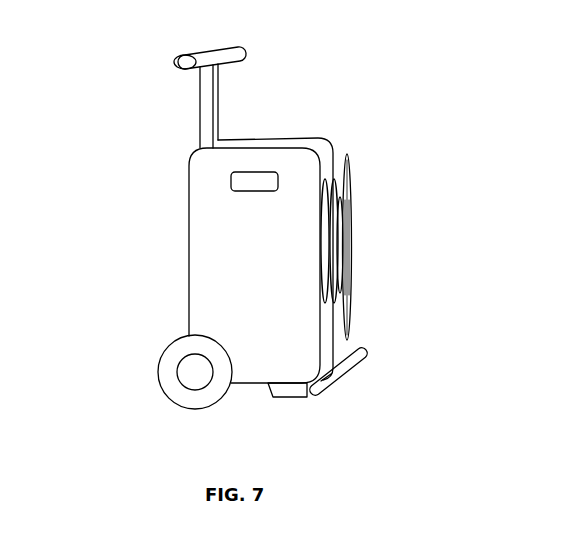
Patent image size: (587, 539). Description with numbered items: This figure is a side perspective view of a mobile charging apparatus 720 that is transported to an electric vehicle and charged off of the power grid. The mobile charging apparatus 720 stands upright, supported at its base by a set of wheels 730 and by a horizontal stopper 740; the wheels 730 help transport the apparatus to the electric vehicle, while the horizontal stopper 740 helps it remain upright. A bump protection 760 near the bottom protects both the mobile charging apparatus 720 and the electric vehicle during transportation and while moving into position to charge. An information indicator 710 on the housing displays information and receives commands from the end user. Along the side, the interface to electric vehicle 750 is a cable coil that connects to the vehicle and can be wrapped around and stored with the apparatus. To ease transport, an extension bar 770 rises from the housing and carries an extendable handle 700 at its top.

The extendable handle 700 is at (174, 60).
The information indicator 710 is at (231, 180).
The mobile charging apparatus 720 is at (189, 257).
The wheels 730 is at (158, 370).
The horizontal stopper 740 is at (270, 398).
The interface to electric vehicle 750 is at (372, 247).
The bump protection 760 is at (363, 353).
The extension bar 770 is at (197, 118).